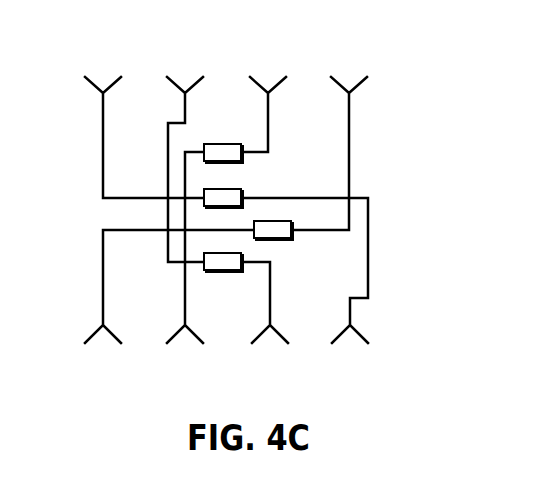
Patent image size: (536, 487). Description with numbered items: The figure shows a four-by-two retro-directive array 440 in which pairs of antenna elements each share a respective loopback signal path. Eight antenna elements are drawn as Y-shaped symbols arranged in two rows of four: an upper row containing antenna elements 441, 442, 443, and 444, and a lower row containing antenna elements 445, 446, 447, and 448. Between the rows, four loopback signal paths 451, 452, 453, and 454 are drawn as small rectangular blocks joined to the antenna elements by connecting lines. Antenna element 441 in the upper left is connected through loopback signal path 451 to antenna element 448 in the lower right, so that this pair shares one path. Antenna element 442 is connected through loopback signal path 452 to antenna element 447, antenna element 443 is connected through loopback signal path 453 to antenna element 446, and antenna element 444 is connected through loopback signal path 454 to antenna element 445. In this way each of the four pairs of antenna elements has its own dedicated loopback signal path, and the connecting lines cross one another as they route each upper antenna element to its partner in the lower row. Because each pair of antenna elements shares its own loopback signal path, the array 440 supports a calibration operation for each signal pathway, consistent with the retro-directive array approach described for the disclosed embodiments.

The 4-by-2 retro-directive array 440 is at (248, 48).
The antenna element 441 is at (130, 137).
The antenna element 442 is at (171, 169).
The antenna element 443 is at (255, 114).
The antenna element 444 is at (330, 153).
The antenna element 445 is at (157, 286).
The antenna element 446 is at (174, 247).
The antenna element 447 is at (258, 302).
The antenna element 448 is at (305, 270).
The loopback signal path 451 is at (223, 188).
The loopback signal path 452 is at (223, 252).
The loopback signal path 453 is at (223, 143).
The loopback signal path 454 is at (273, 221).